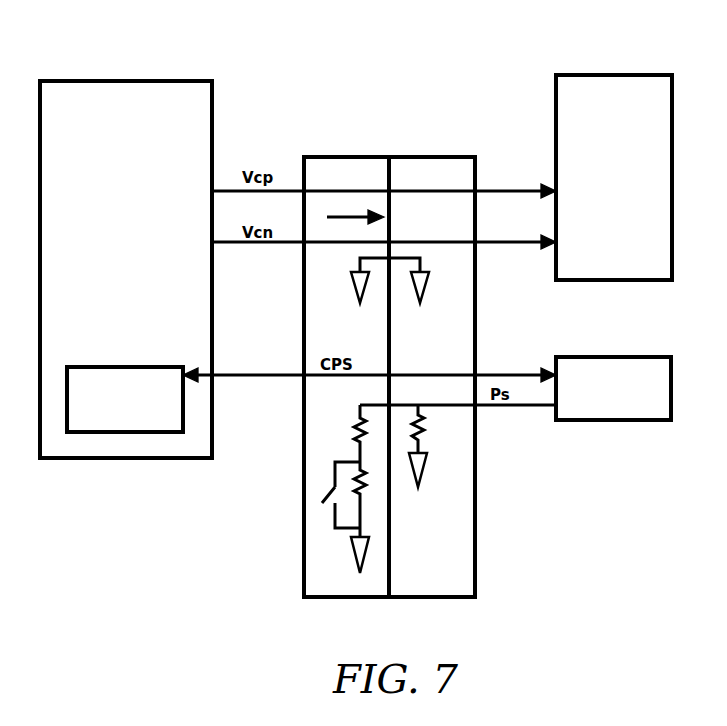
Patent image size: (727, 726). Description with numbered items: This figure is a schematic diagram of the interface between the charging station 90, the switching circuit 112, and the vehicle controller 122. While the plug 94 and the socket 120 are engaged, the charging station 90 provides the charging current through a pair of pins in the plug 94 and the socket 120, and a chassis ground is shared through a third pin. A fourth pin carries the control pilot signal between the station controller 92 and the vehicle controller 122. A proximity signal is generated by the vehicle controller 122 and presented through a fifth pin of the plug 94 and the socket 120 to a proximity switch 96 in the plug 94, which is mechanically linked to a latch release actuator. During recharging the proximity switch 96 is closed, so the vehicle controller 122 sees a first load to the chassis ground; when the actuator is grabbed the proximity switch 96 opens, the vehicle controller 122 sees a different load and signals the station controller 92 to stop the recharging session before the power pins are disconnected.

The charging station 90 is at (128, 80).
The station controller 92 is at (125, 366).
The plug 94 is at (355, 156).
The proximity switch 96 is at (324, 498).
The switching circuit 112 is at (612, 74).
The socket 120 is at (432, 156).
The vehicle controller 122 is at (612, 356).